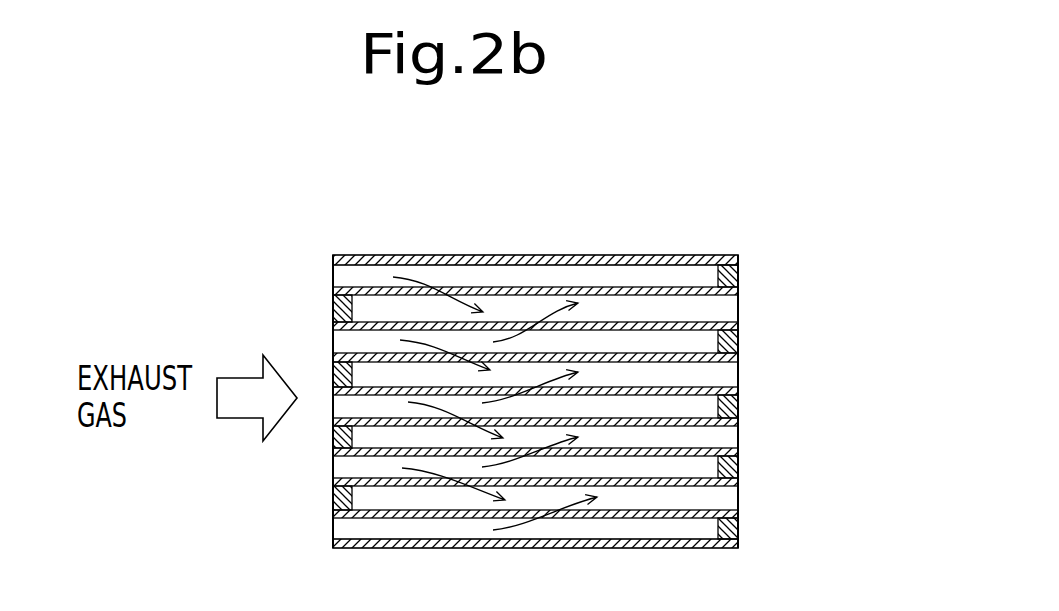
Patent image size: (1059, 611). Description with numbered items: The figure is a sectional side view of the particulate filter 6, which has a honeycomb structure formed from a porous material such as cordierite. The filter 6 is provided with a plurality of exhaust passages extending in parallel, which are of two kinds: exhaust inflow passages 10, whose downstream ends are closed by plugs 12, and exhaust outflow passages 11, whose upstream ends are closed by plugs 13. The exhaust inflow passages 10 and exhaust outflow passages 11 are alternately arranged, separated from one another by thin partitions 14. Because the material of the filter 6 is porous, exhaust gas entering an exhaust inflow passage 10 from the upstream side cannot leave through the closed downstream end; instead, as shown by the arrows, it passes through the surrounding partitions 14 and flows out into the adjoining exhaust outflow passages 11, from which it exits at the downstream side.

The filter 6 is at (667, 252).
The exhaust inflow passage 10 is at (695, 270).
The exhaust outflow passage 11 is at (352, 283).
The plug 12 is at (740, 273).
The plug 13 is at (340, 310).
The partition 14 is at (530, 327).